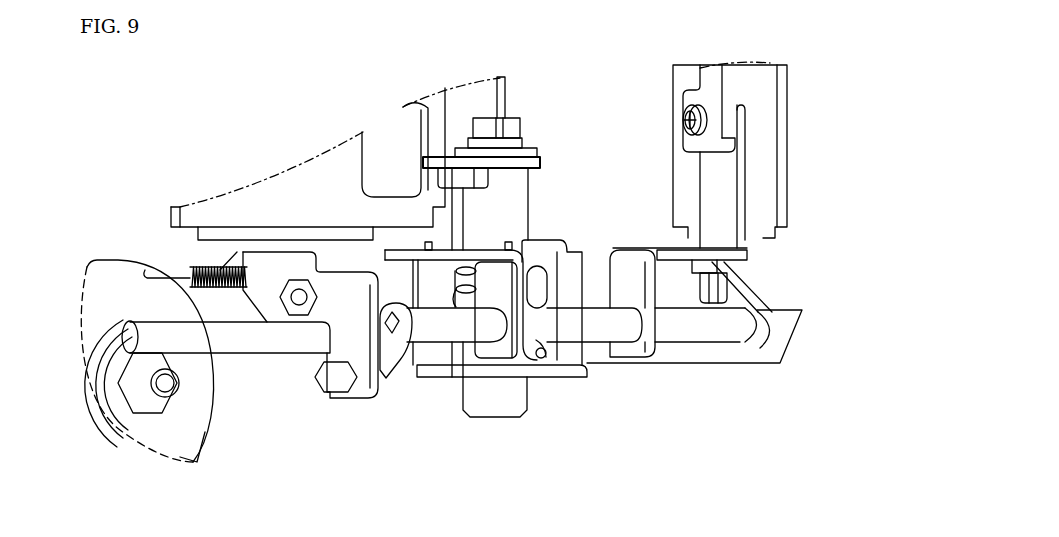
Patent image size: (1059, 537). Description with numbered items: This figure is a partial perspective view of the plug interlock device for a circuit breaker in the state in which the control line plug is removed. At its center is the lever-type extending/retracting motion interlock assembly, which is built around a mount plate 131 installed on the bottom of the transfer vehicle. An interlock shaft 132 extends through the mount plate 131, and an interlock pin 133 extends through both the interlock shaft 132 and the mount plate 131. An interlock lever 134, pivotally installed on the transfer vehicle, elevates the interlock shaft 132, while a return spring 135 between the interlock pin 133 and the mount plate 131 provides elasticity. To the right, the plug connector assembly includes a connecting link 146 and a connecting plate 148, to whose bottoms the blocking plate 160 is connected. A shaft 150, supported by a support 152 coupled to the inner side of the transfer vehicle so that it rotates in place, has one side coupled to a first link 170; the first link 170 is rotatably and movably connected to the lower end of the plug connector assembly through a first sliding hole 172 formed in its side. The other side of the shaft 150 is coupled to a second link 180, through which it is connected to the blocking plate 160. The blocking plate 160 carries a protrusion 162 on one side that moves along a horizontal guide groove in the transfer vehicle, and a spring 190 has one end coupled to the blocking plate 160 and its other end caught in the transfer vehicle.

The mount plate 131 is at (570, 258).
The interlock shaft 132 is at (517, 200).
The interlock pin 133 is at (540, 368).
The interlock lever 134 is at (237, 345).
The return spring 135 is at (450, 265).
The connecting link 146 is at (713, 87).
The connecting plate 148 is at (728, 182).
The shaft 150 is at (598, 330).
The support 152 is at (627, 350).
The blocking plate 160 is at (268, 308).
The protrusion 162 is at (290, 297).
The first link 170 is at (740, 300).
The first sliding hole 172 is at (723, 285).
The second link 180 is at (383, 378).
The spring 190 is at (193, 272).